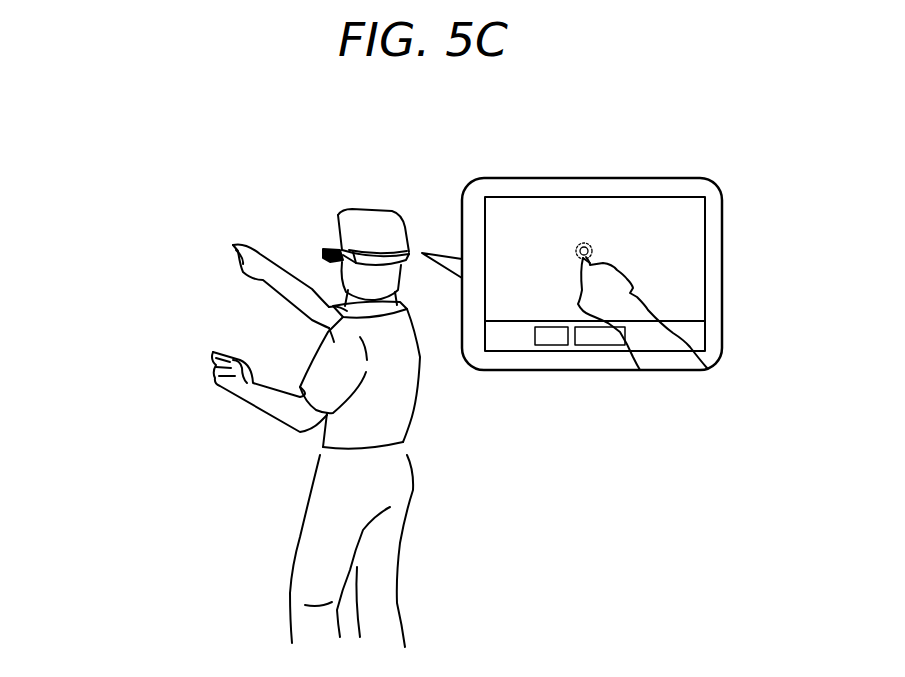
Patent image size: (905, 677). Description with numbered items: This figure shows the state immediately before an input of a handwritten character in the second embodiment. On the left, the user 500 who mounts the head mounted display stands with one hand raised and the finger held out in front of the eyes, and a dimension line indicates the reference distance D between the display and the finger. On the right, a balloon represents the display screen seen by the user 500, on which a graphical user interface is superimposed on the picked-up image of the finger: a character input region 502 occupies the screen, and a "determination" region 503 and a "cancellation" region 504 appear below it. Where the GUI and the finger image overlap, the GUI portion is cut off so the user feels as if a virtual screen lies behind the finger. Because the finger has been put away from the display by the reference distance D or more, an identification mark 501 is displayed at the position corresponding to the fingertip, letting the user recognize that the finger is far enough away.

The user 500 is at (396, 197).
The identification mark 501 is at (587, 242).
The character input region 502 is at (693, 241).
The determination region 503 is at (543, 348).
The cancellation region 504 is at (598, 348).
The reference distance D is at (325, 220).